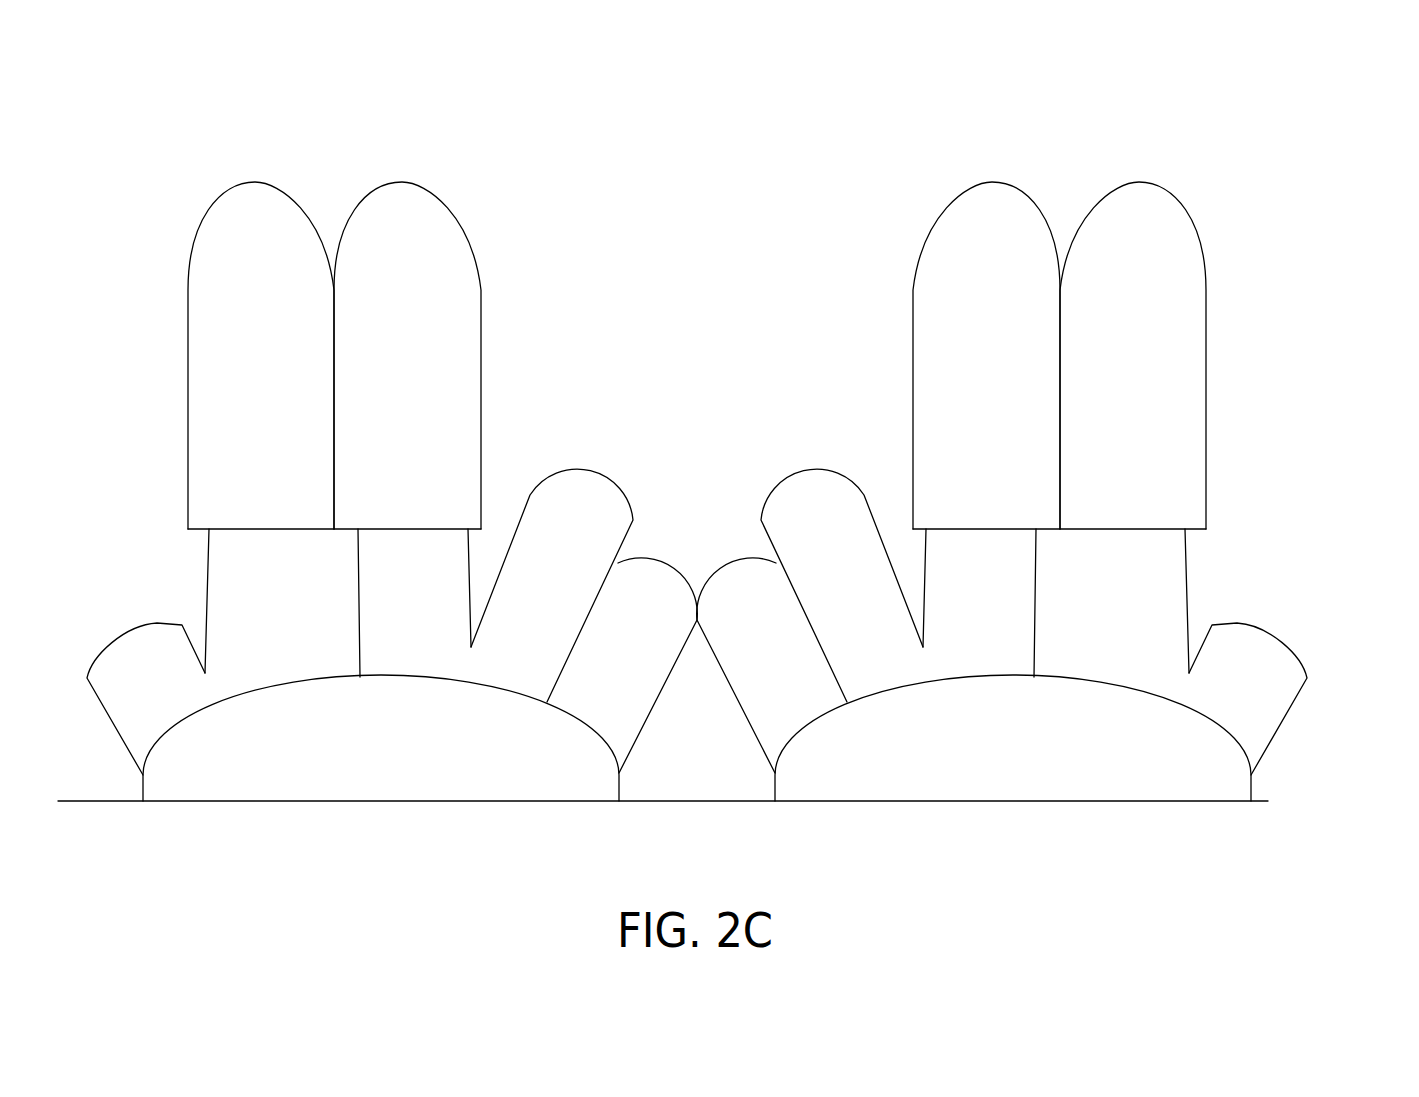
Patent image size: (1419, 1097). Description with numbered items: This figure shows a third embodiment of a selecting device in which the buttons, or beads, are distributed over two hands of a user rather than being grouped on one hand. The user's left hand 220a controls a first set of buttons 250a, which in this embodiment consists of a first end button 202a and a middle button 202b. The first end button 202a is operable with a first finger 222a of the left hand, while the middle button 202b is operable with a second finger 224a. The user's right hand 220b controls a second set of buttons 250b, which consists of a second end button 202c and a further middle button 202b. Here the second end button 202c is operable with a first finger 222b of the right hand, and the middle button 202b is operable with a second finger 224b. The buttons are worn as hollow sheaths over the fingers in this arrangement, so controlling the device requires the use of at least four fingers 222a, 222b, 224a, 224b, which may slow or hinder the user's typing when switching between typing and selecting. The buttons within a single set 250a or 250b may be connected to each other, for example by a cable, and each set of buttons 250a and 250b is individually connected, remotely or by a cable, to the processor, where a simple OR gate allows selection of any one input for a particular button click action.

The first set of buttons 250a is at (320, 306).
The second set of buttons 250b is at (1074, 306).
The first end button 202a is at (292, 283).
The middle button 202b is at (432, 283).
The second end button 202c is at (1165, 283).
The first finger 222a is at (1190, 577).
The first finger 222b is at (207, 588).
The second finger 224a is at (927, 560).
The second finger 224b is at (468, 560).
The left hand 220a is at (1057, 760).
The right hand 220b is at (415, 760).